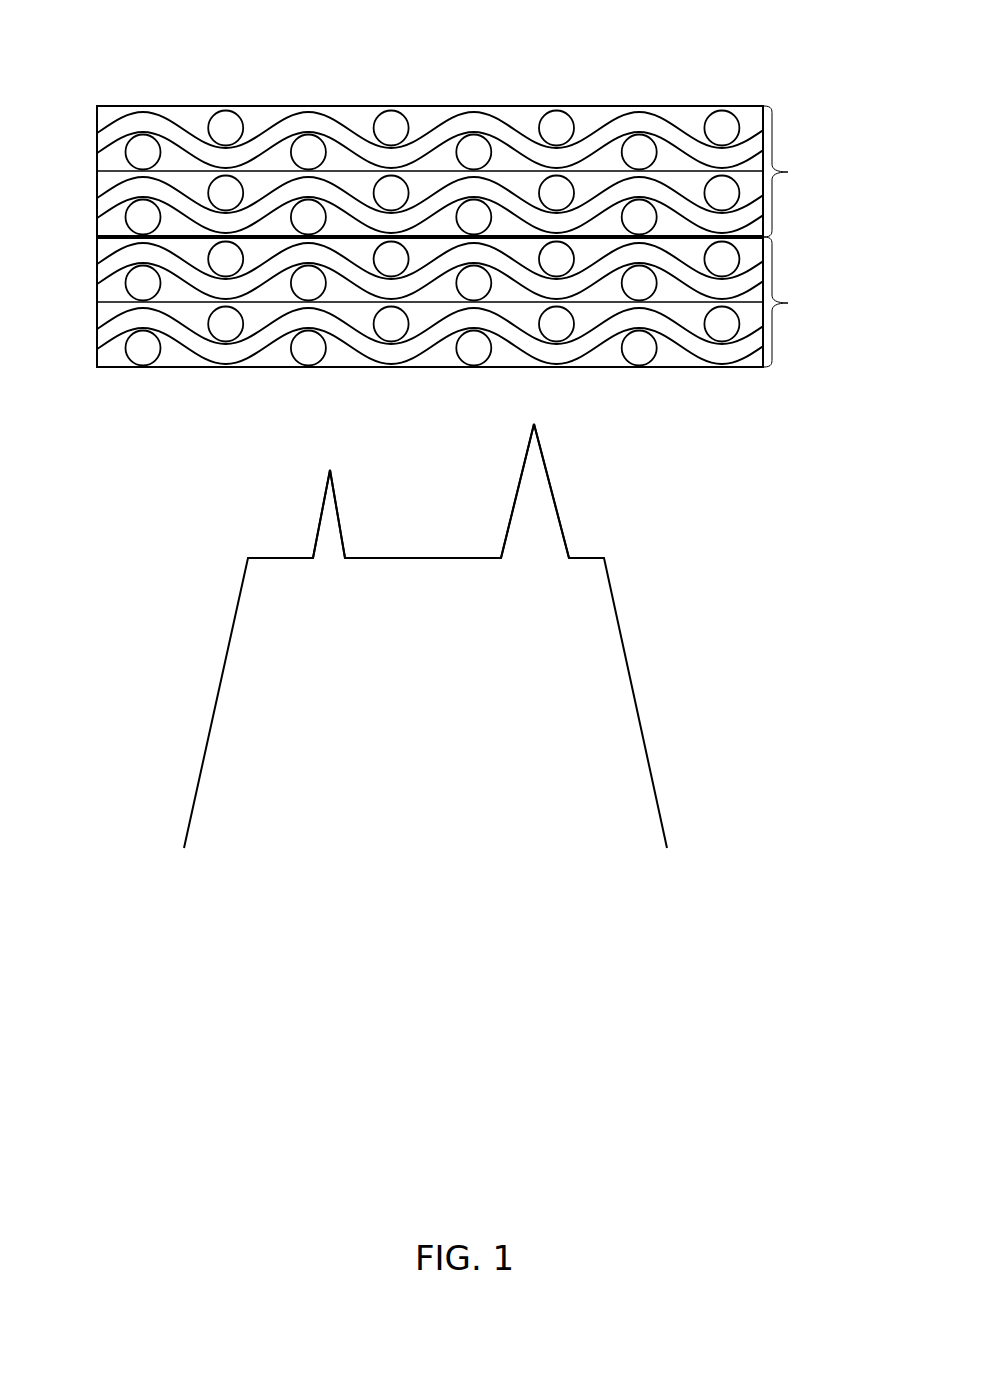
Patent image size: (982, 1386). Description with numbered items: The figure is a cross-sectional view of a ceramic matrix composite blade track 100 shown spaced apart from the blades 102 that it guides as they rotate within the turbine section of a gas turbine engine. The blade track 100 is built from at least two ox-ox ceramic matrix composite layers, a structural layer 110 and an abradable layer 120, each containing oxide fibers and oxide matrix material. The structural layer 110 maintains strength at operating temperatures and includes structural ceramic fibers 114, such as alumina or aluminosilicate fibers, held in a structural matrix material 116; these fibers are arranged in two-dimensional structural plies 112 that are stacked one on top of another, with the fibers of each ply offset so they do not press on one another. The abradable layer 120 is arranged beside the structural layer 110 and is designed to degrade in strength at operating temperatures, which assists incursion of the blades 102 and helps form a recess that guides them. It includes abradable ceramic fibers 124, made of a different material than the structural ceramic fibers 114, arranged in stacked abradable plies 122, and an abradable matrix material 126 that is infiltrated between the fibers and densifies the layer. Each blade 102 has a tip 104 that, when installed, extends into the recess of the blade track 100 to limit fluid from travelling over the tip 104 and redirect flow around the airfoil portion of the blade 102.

The blade track 100 is at (328, 76).
The blade 102 is at (227, 642).
The tip 104 is at (328, 472).
The structural layer 110 is at (790, 172).
The structural ply 112 is at (80, 159).
The structural ceramic fibers 114 is at (556, 193).
The structural matrix material 116 is at (402, 172).
The abradable layer 120 is at (790, 303).
The abradable ply 122 is at (80, 285).
The abradable ceramic fibers 124 is at (474, 348).
The abradable matrix material 126 is at (402, 303).